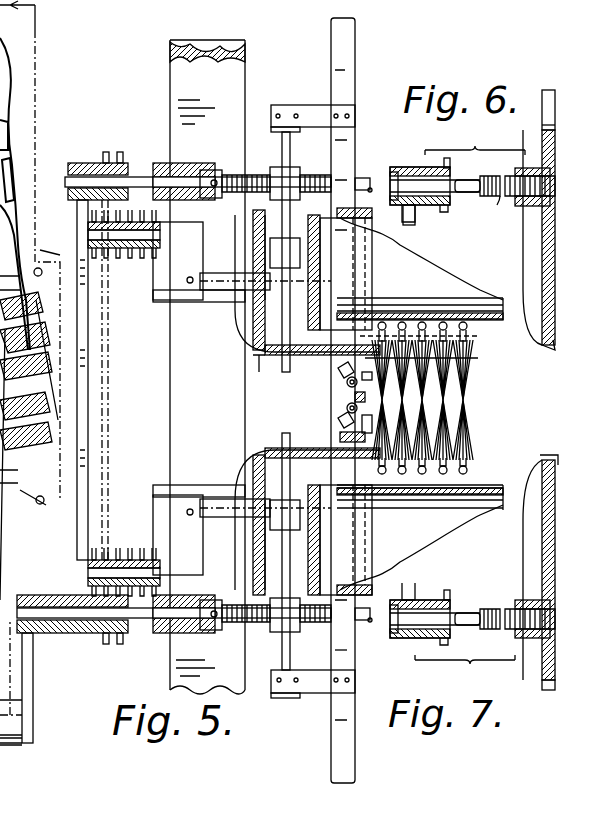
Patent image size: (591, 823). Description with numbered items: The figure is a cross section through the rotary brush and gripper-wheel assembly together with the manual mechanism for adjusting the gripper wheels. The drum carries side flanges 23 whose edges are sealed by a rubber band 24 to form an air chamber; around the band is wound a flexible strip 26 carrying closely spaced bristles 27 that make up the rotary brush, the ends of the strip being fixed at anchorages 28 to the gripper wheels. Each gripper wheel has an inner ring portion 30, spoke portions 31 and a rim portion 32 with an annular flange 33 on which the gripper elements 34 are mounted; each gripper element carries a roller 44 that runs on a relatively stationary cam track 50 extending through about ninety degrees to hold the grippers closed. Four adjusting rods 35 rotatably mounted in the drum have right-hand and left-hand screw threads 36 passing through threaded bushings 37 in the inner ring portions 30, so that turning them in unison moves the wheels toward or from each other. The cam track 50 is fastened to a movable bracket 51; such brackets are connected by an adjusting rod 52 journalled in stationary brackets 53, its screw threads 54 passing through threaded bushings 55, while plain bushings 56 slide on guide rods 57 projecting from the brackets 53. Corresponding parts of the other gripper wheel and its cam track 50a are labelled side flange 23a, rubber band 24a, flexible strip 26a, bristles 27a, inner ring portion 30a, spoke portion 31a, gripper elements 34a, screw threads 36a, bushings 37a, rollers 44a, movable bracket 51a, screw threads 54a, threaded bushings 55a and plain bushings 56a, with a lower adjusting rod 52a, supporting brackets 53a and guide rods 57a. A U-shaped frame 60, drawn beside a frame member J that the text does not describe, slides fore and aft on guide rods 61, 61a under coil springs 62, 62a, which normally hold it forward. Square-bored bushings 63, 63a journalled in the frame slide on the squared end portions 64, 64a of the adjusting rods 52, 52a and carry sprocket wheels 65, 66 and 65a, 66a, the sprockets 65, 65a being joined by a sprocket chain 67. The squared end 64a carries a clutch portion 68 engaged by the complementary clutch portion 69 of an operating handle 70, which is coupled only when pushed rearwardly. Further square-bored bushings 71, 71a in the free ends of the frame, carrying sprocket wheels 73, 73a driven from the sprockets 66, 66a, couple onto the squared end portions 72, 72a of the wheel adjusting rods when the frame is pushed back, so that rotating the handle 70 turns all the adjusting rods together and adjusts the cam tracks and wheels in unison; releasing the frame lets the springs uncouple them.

In FIG. 5, the frame column J is at (207, 367).
In FIG. 5, the side flanges 23 is at (372, 251).
In FIG. 5, the sleeve 23a is at (372, 528).
In FIG. 5, the rubber band 24 is at (495, 320).
In FIG. 5, the frame rail 24a is at (472, 530).
In FIG. 5, the flexible strip 26 is at (402, 322).
In FIG. 5, the spring hook 26a is at (468, 470).
In FIG. 5, the bristles 27 is at (466, 383).
In FIG. 5, the spring 27a is at (472, 420).
In FIG. 5, the anchorage 28 is at (437, 351).
In FIG. 5, the inner ring portion 30 is at (540, 541).
In FIG. 6, the inner ring portion 30 is at (548, 125).
In FIG. 7, the side wall 30a is at (545, 670).
In FIG. 5, the spoke portions 31 is at (253, 230).
In FIG. 5, the bracket 31a is at (500, 500).
In FIG. 5, the rim portion 32 is at (260, 358).
In FIG. 5, the annular flange 33 is at (380, 322).
In FIG. 5, the gripper elements 34 is at (336, 372).
In FIG. 5, the hook member 34a is at (340, 419).
In FIG. 6, the adjusting rods 35 is at (535, 168).
In FIG. 6, the screw threads 36 is at (505, 205).
In FIG. 7, the spring 36a is at (500, 632).
In FIG. 6, the threaded bushings 37 is at (520, 172).
In FIG. 7, the coil spring 37a is at (540, 640).
In FIG. 5, the roller 44 is at (342, 385).
In FIG. 5, the latch 44a is at (340, 432).
In FIG. 5, the cam track 50 is at (355, 48).
In FIG. 5, the cam track 50a is at (355, 658).
In FIG. 5, the movable brackets 51 is at (288, 160).
In FIG. 5, the cross plate 51a is at (284, 568).
In FIG. 5, the adjusting rod 52 is at (175, 175).
In FIG. 5, the adjusting rod 52a is at (162, 633).
In FIG. 5, the stationary brackets 53 is at (165, 253).
In FIG. 5, the supporting brackets 53a is at (232, 540).
In FIG. 5, the screw threads 54 is at (254, 172).
In FIG. 5, the coil spring 54a is at (312, 625).
In FIG. 5, the threaded bushings 55 is at (298, 172).
In FIG. 5, the collar 55a is at (268, 628).
In FIG. 5, the plain bushings 56 is at (270, 300).
In FIG. 5, the collar 56a is at (268, 525).
In FIG. 5, the guide rods 57 is at (222, 292).
In FIG. 5, the guide rods 57a is at (215, 500).
In FIG. 5, the U-shaped frame 60 is at (88, 334).
In FIG. 6, the U-shaped frame 60 is at (415, 218).
In FIG. 5, the guide rod 61 is at (130, 230).
In FIG. 5, the guide rod 61a is at (130, 568).
In FIG. 5, the coil spring 62 is at (135, 250).
In FIG. 5, the coil spring 62a is at (95, 548).
In FIG. 5, the square-bored bushing 63 is at (92, 163).
In FIG. 5, the square-bored bushing 63a is at (95, 633).
In FIG. 5, the squared end portion 64 is at (135, 177).
In FIG. 5, the squared end portion 64a is at (138, 620).
In FIG. 5, the sprocket wheel 65 is at (110, 147).
In FIG. 5, the sprocket wheel 65a is at (106, 644).
In FIG. 5, the sprocket wheel 66 is at (121, 152).
In FIG. 5, the sprocket wheel 66a is at (120, 644).
In FIG. 5, the sprocket chain 67 is at (108, 380).
In FIG. 5, the clutch portion 68 is at (72, 633).
In FIG. 5, the clutch portion 69 is at (36, 596).
In FIG. 5, the operating handle 70 is at (8, 745).
In FIG. 6, the square-bored bushing 71 is at (418, 167).
In FIG. 7, the square-bored bushing 71a is at (418, 600).
In FIG. 6, the squared end portion 72 is at (466, 194).
In FIG. 7, the squared end portion 72a is at (466, 613).
In FIG. 6, the sprocket wheel 73 is at (450, 163).
In FIG. 7, the sprocket wheel 73a is at (450, 592).